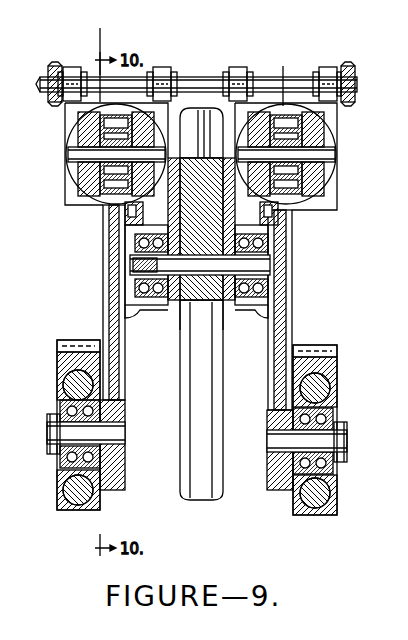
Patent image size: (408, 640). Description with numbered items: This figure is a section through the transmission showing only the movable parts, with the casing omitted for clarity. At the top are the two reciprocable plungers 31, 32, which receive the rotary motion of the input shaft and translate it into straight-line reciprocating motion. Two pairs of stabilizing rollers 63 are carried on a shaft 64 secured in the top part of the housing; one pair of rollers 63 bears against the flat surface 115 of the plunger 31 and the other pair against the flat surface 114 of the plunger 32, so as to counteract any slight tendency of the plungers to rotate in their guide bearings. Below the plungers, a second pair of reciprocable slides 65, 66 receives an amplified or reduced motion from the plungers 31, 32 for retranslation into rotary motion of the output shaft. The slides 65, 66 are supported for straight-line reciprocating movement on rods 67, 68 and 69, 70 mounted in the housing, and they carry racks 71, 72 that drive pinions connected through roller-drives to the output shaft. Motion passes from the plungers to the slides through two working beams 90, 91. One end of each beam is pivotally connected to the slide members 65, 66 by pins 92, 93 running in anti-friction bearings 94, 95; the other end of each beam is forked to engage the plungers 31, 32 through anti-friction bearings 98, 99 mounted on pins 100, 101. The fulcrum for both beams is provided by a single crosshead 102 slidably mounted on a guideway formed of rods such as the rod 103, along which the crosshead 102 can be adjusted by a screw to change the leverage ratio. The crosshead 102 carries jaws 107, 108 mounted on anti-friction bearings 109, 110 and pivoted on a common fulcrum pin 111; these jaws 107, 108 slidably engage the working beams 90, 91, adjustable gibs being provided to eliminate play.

The reciprocable plunger 31 is at (314, 154).
The reciprocable plunger 32 is at (87, 152).
The stabilizing rollers 63 is at (72, 70).
The shaft 64 is at (206, 78).
The reciprocable slide 65 is at (66, 412).
The reciprocable slide 66 is at (324, 418).
The rod 67 is at (328, 392).
The rod 68 is at (332, 486).
The rod 69 is at (64, 378).
The rod 70 is at (64, 484).
The rack 71 is at (312, 351).
The rack 72 is at (82, 346).
The working beam 90 is at (290, 231).
The working beam 91 is at (106, 229).
The pin 92 is at (340, 441).
The pin 93 is at (70, 431).
The anti-friction bearing 94 is at (334, 416).
The anti-friction bearing 95 is at (60, 406).
The anti-friction bearing 98 is at (298, 140).
The anti-friction bearing 99 is at (104, 130).
The pin 100 is at (312, 157).
The pin 101 is at (80, 153).
The crosshead 102 is at (183, 330).
The rod 103 is at (190, 455).
The jaw 107 is at (282, 318).
The jaw 108 is at (140, 312).
The anti-friction bearing 109 is at (262, 289).
The anti-friction bearing 110 is at (136, 285).
The fulcrum pin 111 is at (250, 265).
The flat surface 114 is at (100, 53).
The flat surface 115 is at (283, 75).